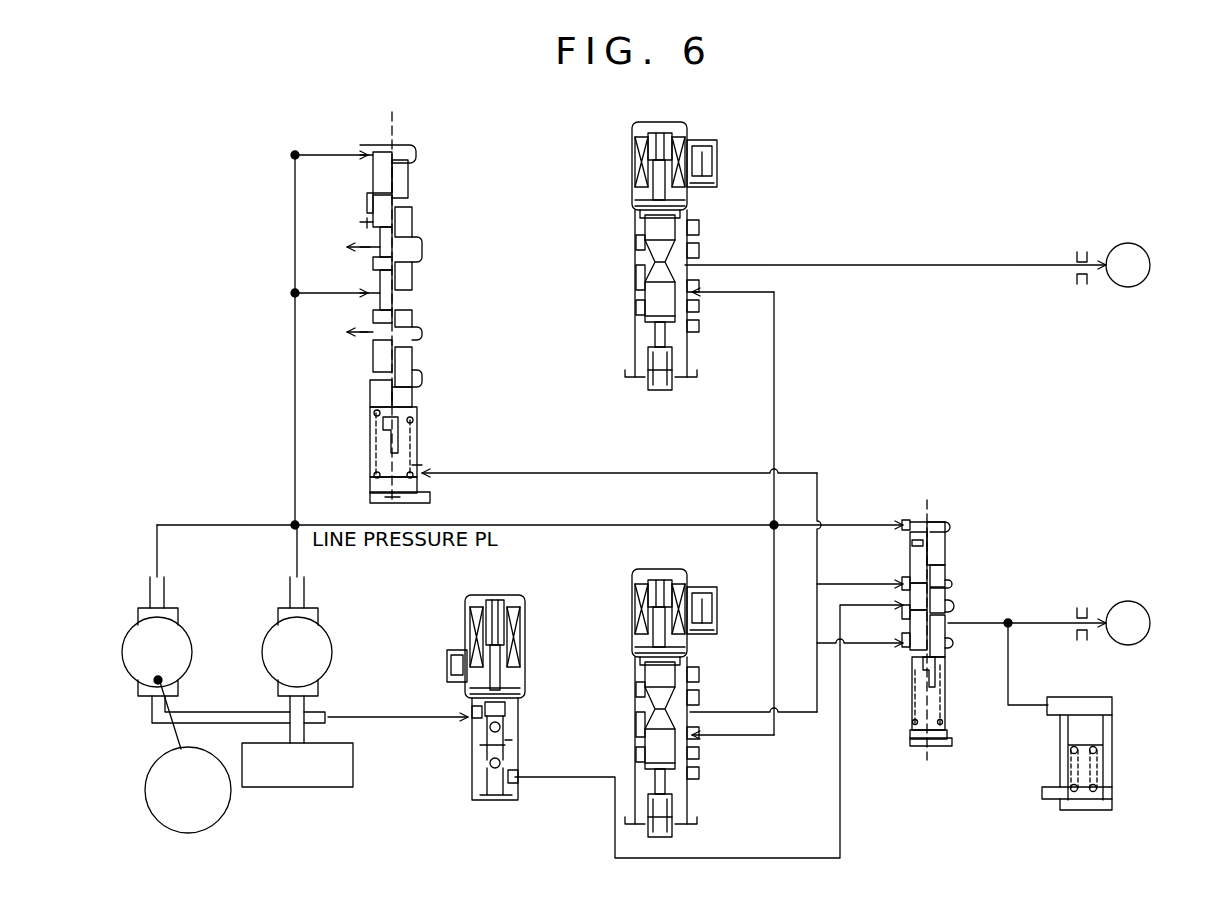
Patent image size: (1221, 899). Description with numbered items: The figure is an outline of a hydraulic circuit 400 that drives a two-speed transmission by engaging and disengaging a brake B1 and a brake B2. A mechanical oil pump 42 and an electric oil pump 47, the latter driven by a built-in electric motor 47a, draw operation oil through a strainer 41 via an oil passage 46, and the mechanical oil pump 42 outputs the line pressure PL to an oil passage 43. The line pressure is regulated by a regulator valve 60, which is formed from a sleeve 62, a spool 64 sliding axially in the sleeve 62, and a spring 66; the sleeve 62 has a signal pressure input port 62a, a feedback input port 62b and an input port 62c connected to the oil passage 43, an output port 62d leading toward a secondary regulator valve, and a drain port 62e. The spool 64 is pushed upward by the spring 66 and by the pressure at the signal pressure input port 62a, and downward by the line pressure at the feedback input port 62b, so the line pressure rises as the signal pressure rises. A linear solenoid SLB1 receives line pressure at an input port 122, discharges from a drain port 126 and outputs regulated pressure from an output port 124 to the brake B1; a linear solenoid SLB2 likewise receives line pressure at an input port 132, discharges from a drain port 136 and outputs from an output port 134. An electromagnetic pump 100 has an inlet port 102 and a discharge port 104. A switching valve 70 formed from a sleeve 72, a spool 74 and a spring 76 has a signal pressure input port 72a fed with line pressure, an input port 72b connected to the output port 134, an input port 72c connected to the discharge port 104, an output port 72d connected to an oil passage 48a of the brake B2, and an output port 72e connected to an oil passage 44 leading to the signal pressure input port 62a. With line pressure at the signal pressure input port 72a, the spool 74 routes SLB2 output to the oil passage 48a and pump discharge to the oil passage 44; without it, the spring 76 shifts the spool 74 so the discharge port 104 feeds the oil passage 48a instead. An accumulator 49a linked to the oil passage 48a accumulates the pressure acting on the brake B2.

The hydraulic circuit 400 is at (1095, 148).
The strainer 41 is at (355, 760).
The mechanical oil pump 42 is at (333, 642).
The oil passage 43 is at (292, 226).
The oil passage 44 is at (615, 472).
The oil passage 46 is at (330, 714).
The electric oil pump 47 is at (193, 642).
The electric motor 47a is at (228, 812).
The oil passage 48a is at (1035, 618).
The accumulator 49a is at (1113, 730).
The regulator valve 60 is at (394, 294).
The sleeve 62 is at (410, 146).
The signal pressure input port 62a is at (420, 466).
The feedback input port 62b is at (368, 144).
The input port 62c is at (368, 284).
The output port 62d is at (368, 322).
The drain port 62e is at (368, 225).
The spool 64 is at (414, 226).
The spring 66 is at (418, 436).
The switching valve 70 is at (961, 626).
The sleeve 72 is at (943, 518).
The signal pressure input port 72a is at (915, 516).
The input port 72b is at (906, 645).
The input port 72c is at (904, 612).
The output port 72d is at (950, 626).
The output port 72e is at (902, 580).
The spool 74 is at (912, 562).
The spring 76 is at (948, 702).
The electromagnetic pump 100 is at (650, 726).
The input port 102 is at (472, 708).
The discharge port 104 is at (518, 776).
The input port 122 is at (688, 290).
The output port 124 is at (688, 260).
The drain port 126 is at (688, 232).
The input port 132 is at (695, 726).
The output port 134 is at (688, 702).
The drain port 136 is at (688, 674).
The linear solenoid SLB1 is at (686, 130).
The linear solenoid SLB2 is at (686, 575).
The brake B1 is at (1113, 265).
The brake B2 is at (1113, 623).